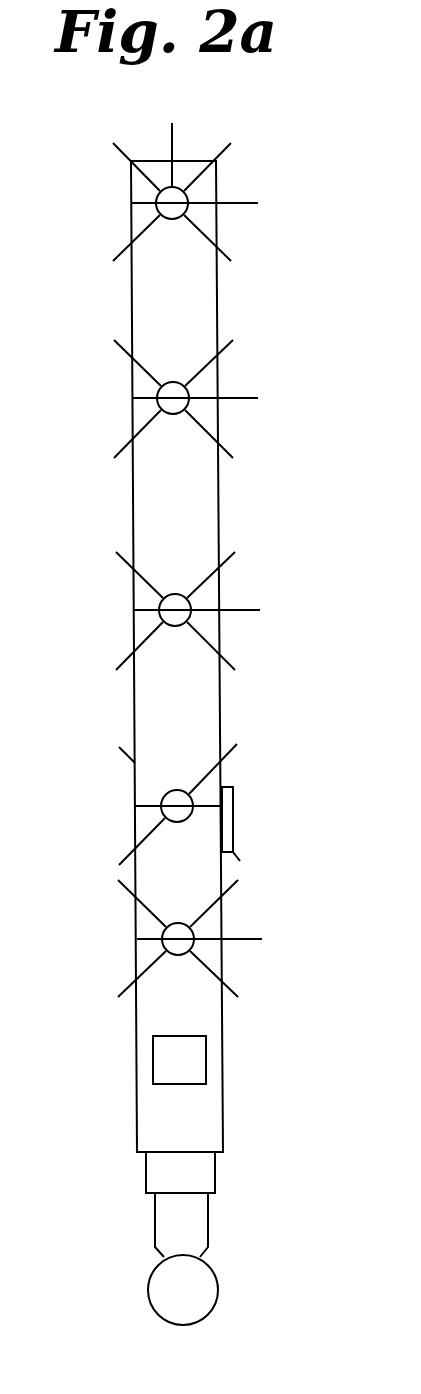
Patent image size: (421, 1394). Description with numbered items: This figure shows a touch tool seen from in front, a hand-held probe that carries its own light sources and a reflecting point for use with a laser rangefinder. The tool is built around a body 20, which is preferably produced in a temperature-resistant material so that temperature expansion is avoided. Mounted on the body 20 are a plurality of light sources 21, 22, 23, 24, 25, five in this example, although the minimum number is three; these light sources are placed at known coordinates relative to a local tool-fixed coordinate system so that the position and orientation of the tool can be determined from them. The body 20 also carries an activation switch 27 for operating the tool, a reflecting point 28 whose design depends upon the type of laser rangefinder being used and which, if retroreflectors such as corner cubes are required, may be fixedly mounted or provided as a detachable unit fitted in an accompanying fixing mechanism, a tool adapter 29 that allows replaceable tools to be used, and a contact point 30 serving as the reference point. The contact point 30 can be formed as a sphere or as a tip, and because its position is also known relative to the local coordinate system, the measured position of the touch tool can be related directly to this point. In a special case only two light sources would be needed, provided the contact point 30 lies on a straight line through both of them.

The body 20 is at (188, 272).
The light source 21 is at (131, 203).
The light source 22 is at (132, 398).
The light source 23 is at (134, 610).
The light source 24 is at (135, 806).
The light source 25 is at (137, 939).
The activation switch 27 is at (233, 806).
The reflecting point 28 is at (160, 1062).
The tool adapter 29 is at (160, 1167).
The contact point 30 is at (160, 1287).